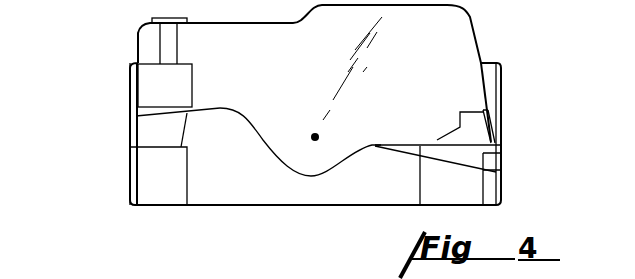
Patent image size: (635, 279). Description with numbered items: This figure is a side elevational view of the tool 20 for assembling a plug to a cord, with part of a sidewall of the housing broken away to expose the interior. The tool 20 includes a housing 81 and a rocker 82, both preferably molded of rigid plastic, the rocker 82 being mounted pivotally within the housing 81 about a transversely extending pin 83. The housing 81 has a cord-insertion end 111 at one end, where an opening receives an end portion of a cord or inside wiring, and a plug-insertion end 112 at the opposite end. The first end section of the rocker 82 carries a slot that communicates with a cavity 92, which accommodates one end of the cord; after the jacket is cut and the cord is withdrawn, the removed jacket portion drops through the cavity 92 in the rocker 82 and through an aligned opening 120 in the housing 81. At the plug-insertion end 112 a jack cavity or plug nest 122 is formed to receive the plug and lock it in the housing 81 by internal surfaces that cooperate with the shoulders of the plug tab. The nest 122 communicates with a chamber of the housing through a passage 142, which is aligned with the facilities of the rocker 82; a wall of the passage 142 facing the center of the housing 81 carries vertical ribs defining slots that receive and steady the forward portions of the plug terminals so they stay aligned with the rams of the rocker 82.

The rocker 82 is at (472, 16).
The passage 142 is at (150, 140).
The pin 83 is at (313, 141).
The opening 120 is at (425, 188).
The cavity 92 is at (440, 142).
The cord-insertion end 111 is at (500, 181).
The plug nest 122 is at (165, 175).
The plug-insertion end 112 is at (136, 147).
The housing 81 is at (230, 191).
The tool 20 is at (38, 272).